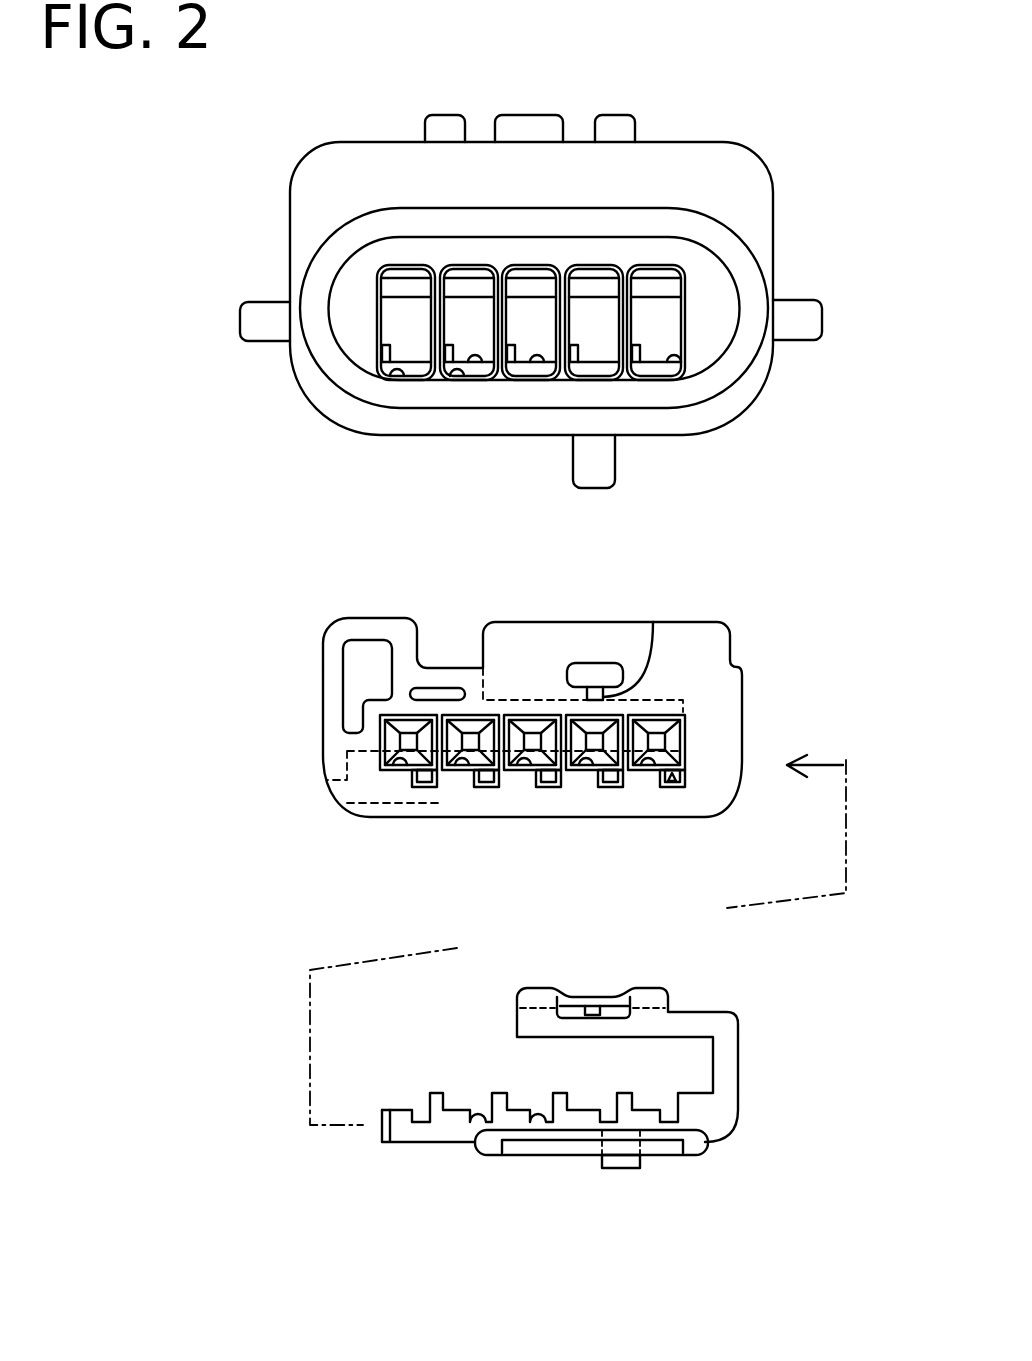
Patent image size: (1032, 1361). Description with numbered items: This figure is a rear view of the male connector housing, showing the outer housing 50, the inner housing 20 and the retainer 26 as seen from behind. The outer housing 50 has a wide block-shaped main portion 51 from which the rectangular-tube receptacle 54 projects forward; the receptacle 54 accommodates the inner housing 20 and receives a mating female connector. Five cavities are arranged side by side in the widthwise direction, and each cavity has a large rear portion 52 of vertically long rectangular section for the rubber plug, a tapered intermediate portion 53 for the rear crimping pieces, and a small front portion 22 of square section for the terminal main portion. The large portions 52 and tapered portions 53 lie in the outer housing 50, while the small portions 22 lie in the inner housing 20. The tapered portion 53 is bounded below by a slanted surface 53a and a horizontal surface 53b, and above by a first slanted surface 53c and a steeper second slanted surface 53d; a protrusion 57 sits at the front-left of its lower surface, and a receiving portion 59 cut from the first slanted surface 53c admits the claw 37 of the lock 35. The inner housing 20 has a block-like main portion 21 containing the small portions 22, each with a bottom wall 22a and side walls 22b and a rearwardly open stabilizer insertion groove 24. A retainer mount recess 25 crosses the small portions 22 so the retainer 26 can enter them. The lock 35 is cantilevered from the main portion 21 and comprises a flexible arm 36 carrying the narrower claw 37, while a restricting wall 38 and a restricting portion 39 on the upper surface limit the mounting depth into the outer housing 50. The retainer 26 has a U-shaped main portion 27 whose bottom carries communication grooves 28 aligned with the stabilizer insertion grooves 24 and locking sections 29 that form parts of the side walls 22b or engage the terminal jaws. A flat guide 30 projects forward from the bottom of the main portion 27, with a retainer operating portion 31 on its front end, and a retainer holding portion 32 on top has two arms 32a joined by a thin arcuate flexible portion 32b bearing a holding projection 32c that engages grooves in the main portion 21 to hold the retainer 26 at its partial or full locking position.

The inner housing 20 is at (733, 810).
The main portion 21 is at (565, 690).
The small front portion 22 is at (535, 802).
The bottom wall 22a is at (522, 778).
The side wall 22b is at (566, 740).
The stabilizer insertion groove 24 is at (668, 788).
The retainer mount recess 25 is at (605, 790).
The retainer 26 is at (737, 1120).
The main portion 27 is at (733, 1045).
The communication groove 28 is at (535, 1110).
The locking section 29 is at (498, 1093).
The guide 30 is at (567, 1140).
The retainer operating portion 31 is at (612, 1168).
The retainer holding portion 32 is at (661, 975).
The arm 32a is at (527, 1000).
The flexible portion 32b is at (573, 1000).
The holding projection 32c is at (600, 1007).
The lock 35 is at (575, 637).
The flexible arm 36 is at (592, 672).
The claw 37 is at (652, 628).
The restricting wall 38 is at (690, 642).
The restricting portion 39 is at (368, 626).
The outer housing 50 is at (775, 219).
The main portion 51 is at (710, 360).
The large rear portion 52 is at (437, 378).
The tapered intermediate portion 53 is at (538, 295).
The slanted surface 53a is at (650, 372).
The horizontal surface 53b is at (683, 350).
The first slanted surface 53c is at (669, 270).
The second slanted surface 53d is at (667, 282).
The receptacle 54 is at (350, 162).
The protrusion 57 is at (449, 346).
The receiving portion 59 is at (603, 272).